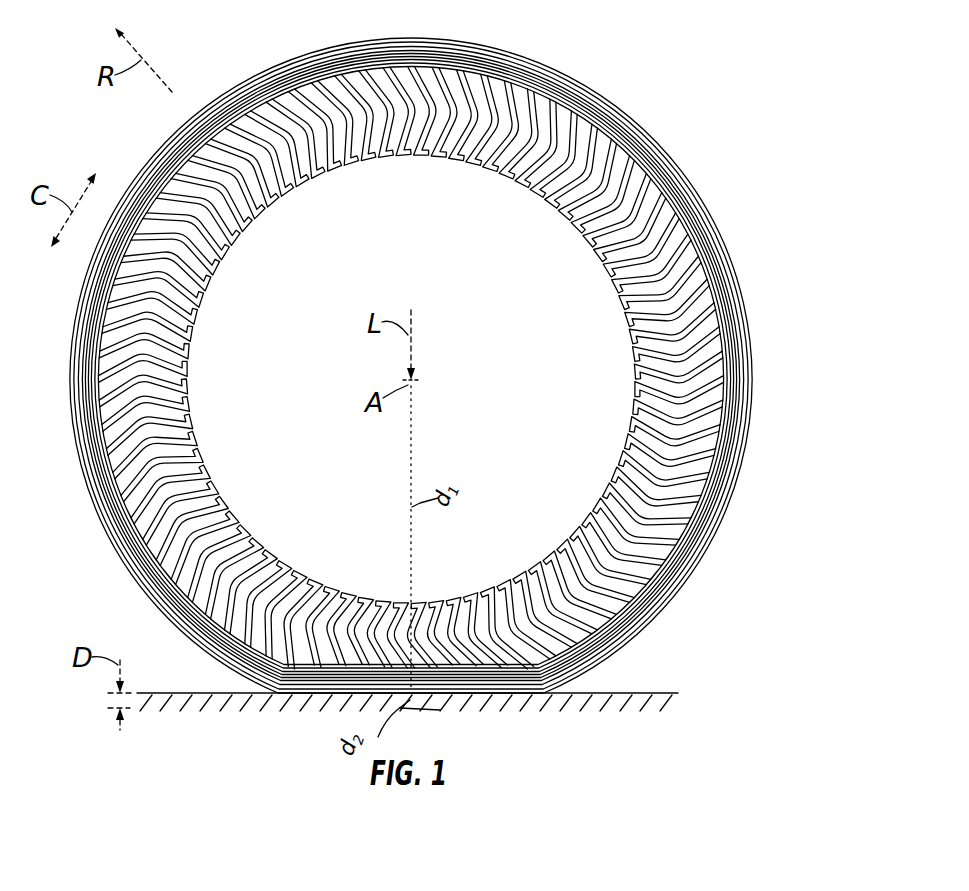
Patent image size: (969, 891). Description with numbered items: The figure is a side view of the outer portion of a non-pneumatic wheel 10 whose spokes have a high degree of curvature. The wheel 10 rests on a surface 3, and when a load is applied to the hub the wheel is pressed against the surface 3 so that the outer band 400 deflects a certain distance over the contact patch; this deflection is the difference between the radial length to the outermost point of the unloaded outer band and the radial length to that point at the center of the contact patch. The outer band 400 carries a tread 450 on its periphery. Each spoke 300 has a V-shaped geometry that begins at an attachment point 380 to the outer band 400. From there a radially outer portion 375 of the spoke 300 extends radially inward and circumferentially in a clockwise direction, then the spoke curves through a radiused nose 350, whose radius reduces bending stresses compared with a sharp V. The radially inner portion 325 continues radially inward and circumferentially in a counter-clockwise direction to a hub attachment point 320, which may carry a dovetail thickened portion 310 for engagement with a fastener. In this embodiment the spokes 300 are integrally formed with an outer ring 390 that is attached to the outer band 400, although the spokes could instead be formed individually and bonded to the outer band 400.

The wheel 10 is at (442, 356).
The tread 450 is at (585, 87).
The outer band 400 is at (670, 580).
The radially outer portion of the spoke 375 is at (444, 365).
The outer ring 390 is at (712, 493).
The attachment point 380 is at (717, 457).
The spoke 300 is at (454, 372).
The radiused nose 350 is at (680, 400).
The radially inner portion 325 is at (646, 312).
The hub attachment point 320 is at (640, 350).
The dovetail thickened portion 310 is at (610, 477).
The surface 3 is at (655, 703).